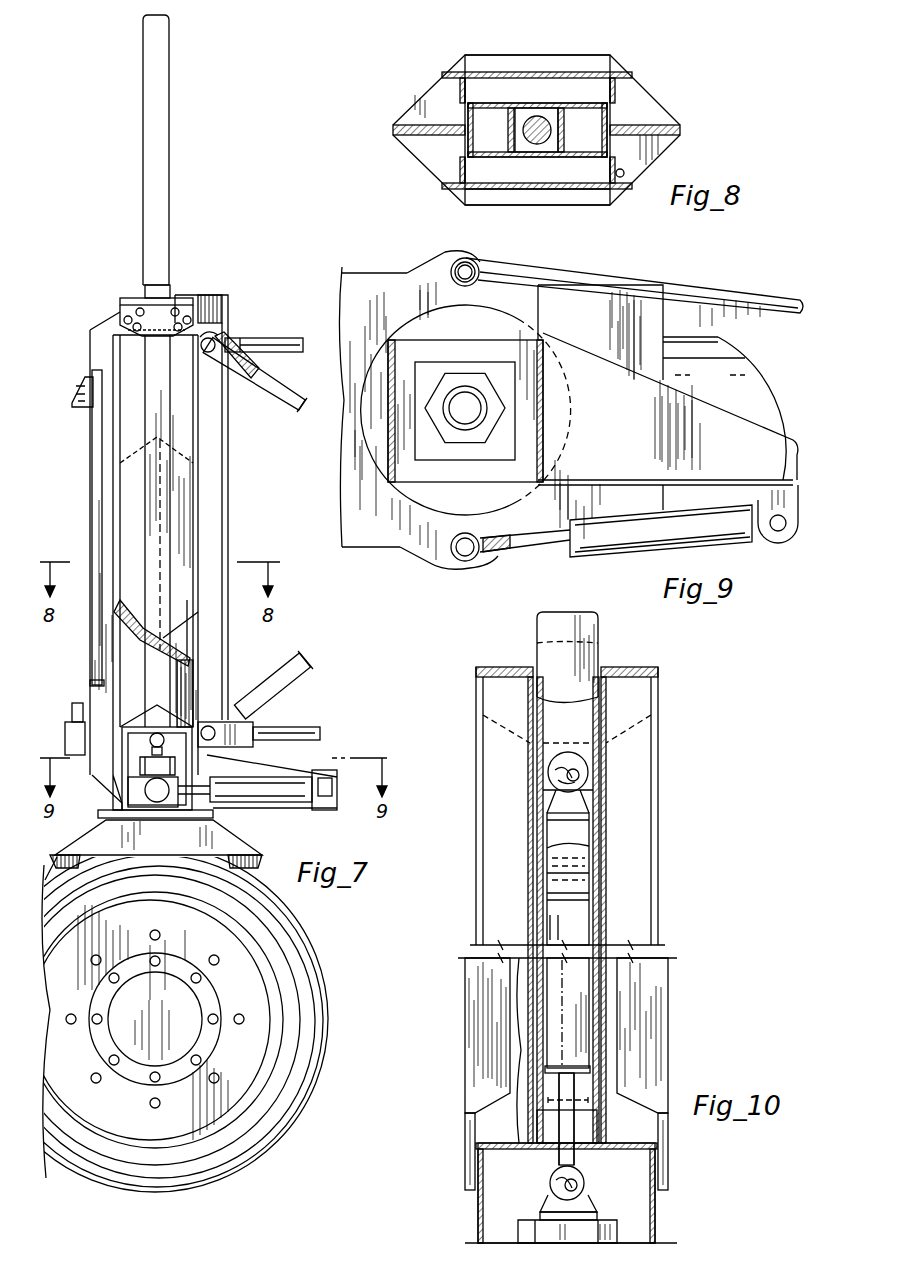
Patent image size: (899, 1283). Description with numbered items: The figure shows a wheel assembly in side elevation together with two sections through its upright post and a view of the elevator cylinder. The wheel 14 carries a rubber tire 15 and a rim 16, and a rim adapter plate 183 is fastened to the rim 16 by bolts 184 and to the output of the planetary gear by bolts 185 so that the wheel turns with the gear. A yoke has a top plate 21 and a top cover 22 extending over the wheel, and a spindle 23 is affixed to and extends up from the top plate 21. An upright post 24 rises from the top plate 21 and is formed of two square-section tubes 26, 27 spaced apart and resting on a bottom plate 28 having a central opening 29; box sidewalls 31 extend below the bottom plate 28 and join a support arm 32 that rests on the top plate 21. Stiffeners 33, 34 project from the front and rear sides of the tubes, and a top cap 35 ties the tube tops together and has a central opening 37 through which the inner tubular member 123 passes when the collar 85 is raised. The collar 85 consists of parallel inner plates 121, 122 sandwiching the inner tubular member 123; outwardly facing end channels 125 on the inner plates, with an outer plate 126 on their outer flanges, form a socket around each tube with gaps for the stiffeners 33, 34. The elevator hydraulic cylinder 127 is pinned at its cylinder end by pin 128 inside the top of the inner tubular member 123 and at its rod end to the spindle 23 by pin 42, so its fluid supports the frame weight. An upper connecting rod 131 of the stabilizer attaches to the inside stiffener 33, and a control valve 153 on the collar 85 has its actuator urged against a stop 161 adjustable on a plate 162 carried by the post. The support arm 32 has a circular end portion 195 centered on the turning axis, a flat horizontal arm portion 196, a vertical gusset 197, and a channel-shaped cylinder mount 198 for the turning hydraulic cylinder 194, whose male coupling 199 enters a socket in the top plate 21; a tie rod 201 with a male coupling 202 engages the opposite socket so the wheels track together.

In FIG. 7, the wheel 14 is at (295, 1135).
In FIG. 9, the wheel 14 is at (768, 388).
In FIG. 7, the rubber tire 15 is at (235, 1165).
In FIG. 7, the rim 16 is at (262, 985).
In FIG. 7, the top plate 21 is at (205, 818).
In FIG. 9, the top plate 21 is at (428, 268).
In FIG. 7, the top cover 22 is at (232, 850).
In FIG. 9, the top cover 22 is at (645, 332).
In FIG. 7, the spindle 23 is at (175, 760).
In FIG. 9, the spindle 23 is at (465, 385).
In FIG. 10, the spindle 23 is at (595, 1225).
In FIG. 8, the upright post 24 is at (392, 133).
In FIG. 7, the tube 26 is at (118, 507).
In FIG. 8, the tube 26 is at (497, 100).
In FIG. 10, the tube 26 is at (476, 920).
In FIG. 7, the tube 27 is at (180, 546).
In FIG. 8, the tube 27 is at (588, 105).
In FIG. 10, the tube 27 is at (658, 925).
In FIG. 8, the bottom plate 28 is at (590, 200).
In FIG. 10, the bottom plate 28 is at (510, 1150).
In FIG. 10, the central opening 29 is at (580, 1150).
In FIG. 7, the box sidewalls 31 is at (113, 790).
In FIG. 9, the box sidewalls 31 is at (545, 455).
In FIG. 10, the box sidewalls 31 is at (656, 1218).
In FIG. 7, the support arm 32 is at (325, 813).
In FIG. 9, the support arm 32 is at (672, 402).
In FIG. 7, the stiffener 33 is at (100, 335).
In FIG. 8, the stiffener 33 is at (403, 127).
In FIG. 7, the stiffener 34 is at (212, 435).
In FIG. 8, the stiffener 34 is at (670, 135).
In FIG. 7, the top cap 35 is at (120, 312).
In FIG. 7, the central opening 37 is at (174, 297).
In FIG. 10, the pin 42 is at (555, 1185).
In FIG. 7, the collar 85 is at (124, 665).
In FIG. 8, the collar 85 is at (625, 120).
In FIG. 10, the collar 85 is at (465, 1032).
In FIG. 7, the inner plate 121 is at (185, 633).
In FIG. 8, the inner plate 121 is at (550, 190).
In FIG. 8, the inner plate 122 is at (585, 100).
In FIG. 7, the inner tubular member 123 is at (158, 518).
In FIG. 8, the inner tubular member 123 is at (522, 157).
In FIG. 10, the inner tubular member 123 is at (600, 1003).
In FIG. 8, the end channel 125 is at (455, 78).
In FIG. 7, the outer plate 126 is at (168, 655).
In FIG. 8, the outer plate 126 is at (530, 72).
In FIG. 10, the elevator hydraulic cylinder 127 is at (590, 873).
In FIG. 10, the pin 128 is at (590, 790).
In FIG. 7, the upper connecting rod 131 is at (265, 344).
In FIG. 7, the positive feedback control valve 153 is at (75, 715).
In FIG. 7, the stop 161 is at (82, 410).
In FIG. 7, the plate 162 is at (92, 533).
In FIG. 7, the rim adapter plate 183 is at (248, 965).
In FIG. 7, the bolts 184 is at (157, 1108).
In FIG. 7, the bolts 185 is at (215, 1021).
In FIG. 7, the turning hydraulic cylinder 194 is at (268, 777).
In FIG. 9, the turning hydraulic cylinder 194 is at (605, 548).
In FIG. 9, the circular end portion 195 is at (410, 325).
In FIG. 9, the flat horizontal arm portion 196 is at (572, 345).
In FIG. 9, the vertical gusset 197 is at (612, 486).
In FIG. 9, the cylinder mount 198 is at (785, 540).
In FIG. 9, the male coupling 199 is at (462, 560).
In FIG. 9, the tie rod 201 is at (700, 288).
In FIG. 9, the male coupling 202 is at (458, 258).